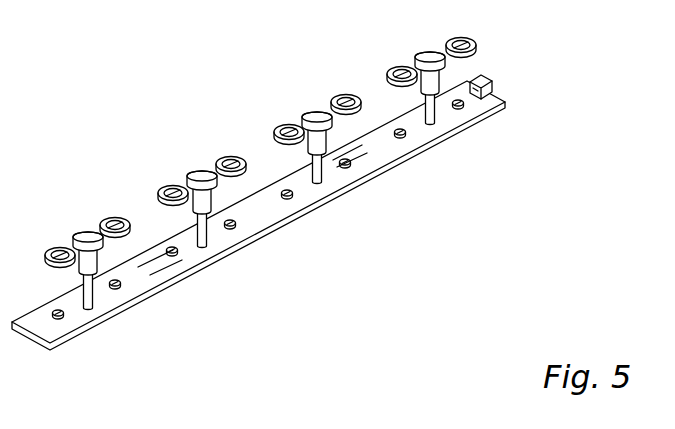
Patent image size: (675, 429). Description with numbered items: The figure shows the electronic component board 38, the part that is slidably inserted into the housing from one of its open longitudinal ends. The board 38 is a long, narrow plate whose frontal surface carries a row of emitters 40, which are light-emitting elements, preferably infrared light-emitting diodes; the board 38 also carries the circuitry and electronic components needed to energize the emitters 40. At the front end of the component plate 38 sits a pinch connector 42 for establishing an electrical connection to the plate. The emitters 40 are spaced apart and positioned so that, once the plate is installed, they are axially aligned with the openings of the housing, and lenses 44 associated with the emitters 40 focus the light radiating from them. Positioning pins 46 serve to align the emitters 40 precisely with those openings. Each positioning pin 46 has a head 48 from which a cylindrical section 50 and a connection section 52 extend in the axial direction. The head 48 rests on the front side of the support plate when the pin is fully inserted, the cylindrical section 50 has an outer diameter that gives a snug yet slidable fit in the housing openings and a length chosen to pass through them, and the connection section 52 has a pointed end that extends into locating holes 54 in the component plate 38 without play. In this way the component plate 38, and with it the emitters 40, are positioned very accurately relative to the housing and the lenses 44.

The electronic component board 38 is at (262, 215).
The emitters 40 is at (60, 316).
The pinch connector 42 is at (492, 87).
The lenses 44 is at (108, 219).
The positioning pins 46 is at (195, 172).
The head 48 is at (354, 161).
The cylindrical section 50 is at (322, 150).
The connection section 52 is at (318, 160).
The locating holes 54 is at (92, 308).